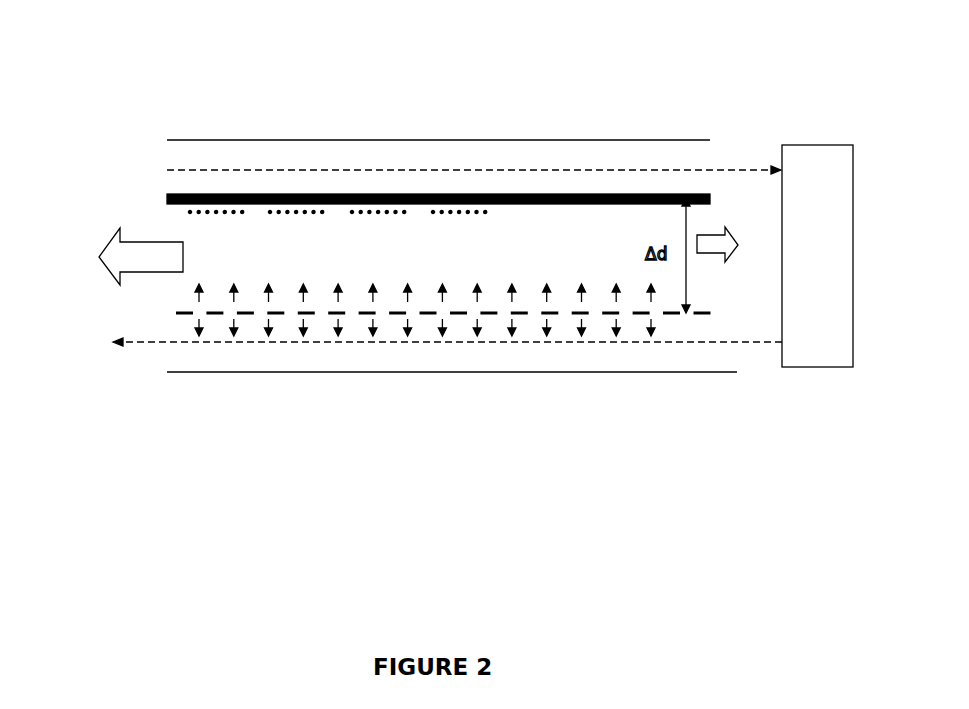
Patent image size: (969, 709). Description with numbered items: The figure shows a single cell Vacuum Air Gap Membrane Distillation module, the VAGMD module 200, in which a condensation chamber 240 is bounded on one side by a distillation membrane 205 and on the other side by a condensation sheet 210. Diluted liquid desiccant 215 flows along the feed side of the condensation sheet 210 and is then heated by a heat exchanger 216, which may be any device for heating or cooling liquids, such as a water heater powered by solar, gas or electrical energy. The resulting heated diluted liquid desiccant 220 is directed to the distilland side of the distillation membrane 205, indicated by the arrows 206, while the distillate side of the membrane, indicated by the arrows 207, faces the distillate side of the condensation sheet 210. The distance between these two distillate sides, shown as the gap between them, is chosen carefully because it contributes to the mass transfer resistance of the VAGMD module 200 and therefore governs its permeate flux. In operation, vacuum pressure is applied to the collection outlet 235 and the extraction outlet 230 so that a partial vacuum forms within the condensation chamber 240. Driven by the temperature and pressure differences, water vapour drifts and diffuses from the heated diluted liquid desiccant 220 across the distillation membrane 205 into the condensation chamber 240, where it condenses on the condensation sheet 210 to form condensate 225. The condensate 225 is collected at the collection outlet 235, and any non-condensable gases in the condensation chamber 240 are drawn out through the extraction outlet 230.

The VAGMD module 200 is at (112, 75).
The distillation membrane 205 is at (703, 316).
The arrows illustrating distilland side of distillation membrane 206 is at (200, 318).
The arrows illustrating distillate side of distillation membrane 207 is at (546, 283).
The condensation sheet 210 is at (538, 193).
The diluted liquid desiccant 215 is at (737, 160).
The heat exchanger 216 is at (834, 227).
The heated diluted liquid desiccant 220 is at (112, 353).
The condensate 225 is at (460, 214).
The extraction outlet 230 is at (712, 245).
The collection outlet 235 is at (112, 245).
The condensation chamber 240 is at (436, 263).